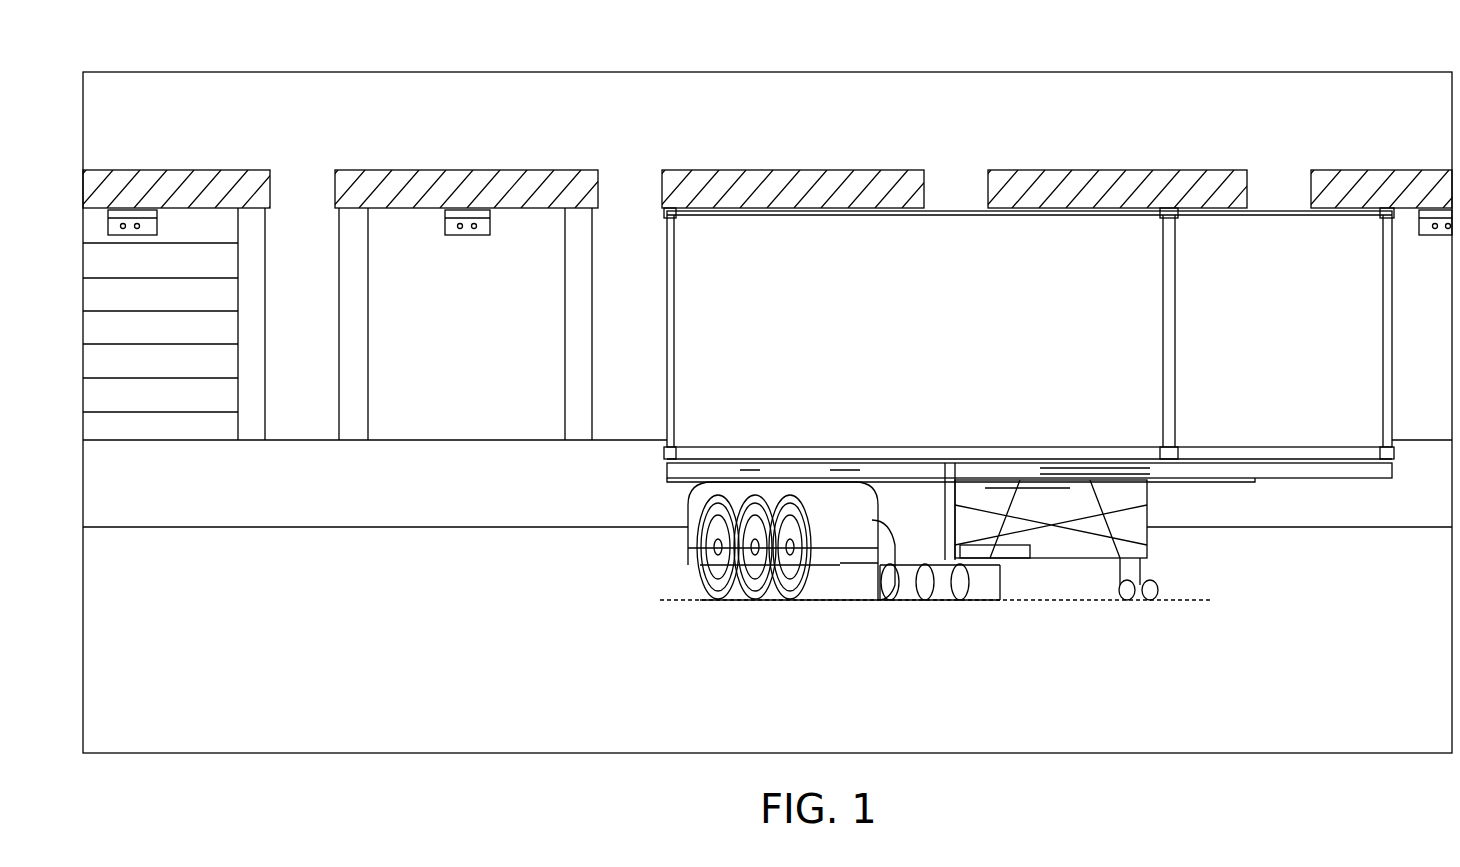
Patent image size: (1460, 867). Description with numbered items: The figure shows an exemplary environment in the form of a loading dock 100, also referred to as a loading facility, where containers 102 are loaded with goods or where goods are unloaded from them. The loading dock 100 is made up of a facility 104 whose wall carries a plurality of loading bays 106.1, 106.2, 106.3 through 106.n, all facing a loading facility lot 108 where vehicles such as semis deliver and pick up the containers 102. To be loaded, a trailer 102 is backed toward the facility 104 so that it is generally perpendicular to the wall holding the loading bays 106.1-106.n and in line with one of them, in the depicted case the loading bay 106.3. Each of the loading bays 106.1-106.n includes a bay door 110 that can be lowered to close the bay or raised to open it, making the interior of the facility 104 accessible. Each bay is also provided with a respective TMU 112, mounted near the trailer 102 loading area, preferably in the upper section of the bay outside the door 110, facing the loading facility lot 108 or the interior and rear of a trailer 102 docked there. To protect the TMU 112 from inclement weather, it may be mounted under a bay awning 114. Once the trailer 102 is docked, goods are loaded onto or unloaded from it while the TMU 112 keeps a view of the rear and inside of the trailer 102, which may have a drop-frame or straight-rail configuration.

The loading dock 100 is at (158, 42).
The container 102 is at (840, 368).
The facility 104 is at (1031, 90).
The loading bay 106.1 is at (177, 269).
The loading bay 106.2 is at (490, 167).
The loading bay 106.3 is at (891, 167).
The loading bay 106.n is at (1363, 167).
The loading facility lot 108 is at (259, 605).
The bay door 110 is at (180, 420).
The TMU 112 is at (135, 222).
The bay awning 114 is at (124, 194).